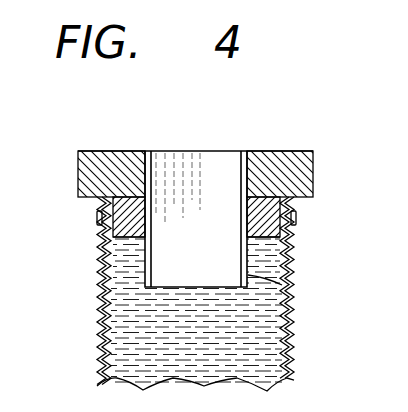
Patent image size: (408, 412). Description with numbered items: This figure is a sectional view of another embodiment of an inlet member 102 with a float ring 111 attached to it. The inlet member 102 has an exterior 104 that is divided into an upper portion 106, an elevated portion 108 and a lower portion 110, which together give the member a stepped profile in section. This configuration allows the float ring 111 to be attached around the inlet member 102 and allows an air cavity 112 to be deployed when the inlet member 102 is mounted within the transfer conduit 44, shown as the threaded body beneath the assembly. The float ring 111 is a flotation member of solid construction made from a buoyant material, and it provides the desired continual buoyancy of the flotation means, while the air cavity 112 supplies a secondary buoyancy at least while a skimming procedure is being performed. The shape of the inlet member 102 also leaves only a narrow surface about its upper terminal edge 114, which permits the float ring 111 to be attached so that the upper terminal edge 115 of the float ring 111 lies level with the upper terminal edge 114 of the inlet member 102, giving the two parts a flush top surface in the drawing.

The transfer conduit 44 is at (296, 331).
The inlet member 102 is at (186, 288).
The exterior 104 is at (145, 264).
The upper portion 106 is at (148, 150).
The elevated portion 108 is at (128, 222).
The lower portion 110 is at (282, 285).
The float ring 111 is at (113, 151).
The air cavity 112 is at (263, 268).
The upper terminal edge 114 is at (162, 150).
The upper terminal edge 115 is at (278, 151).